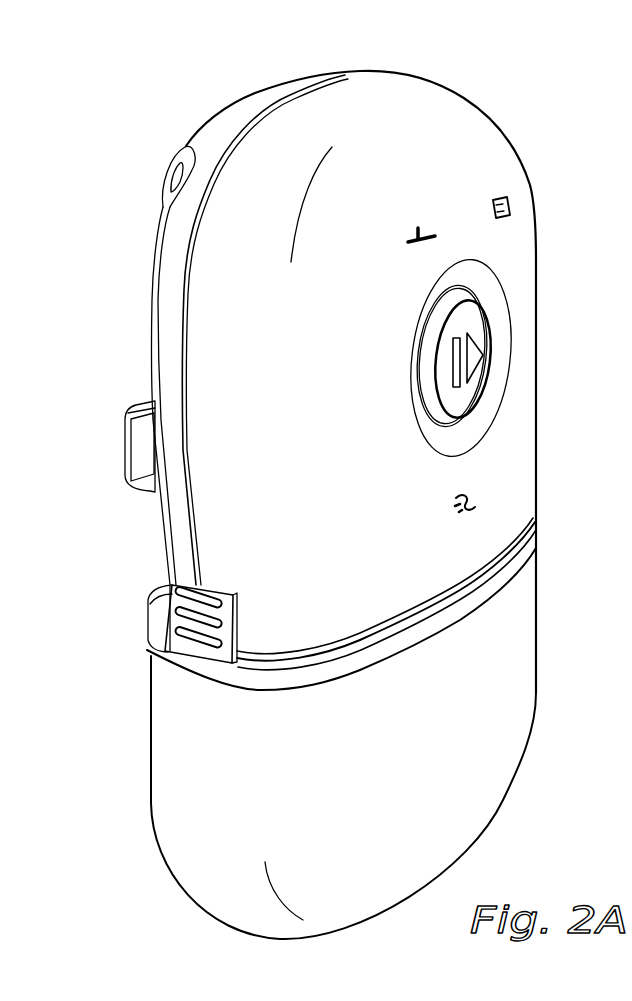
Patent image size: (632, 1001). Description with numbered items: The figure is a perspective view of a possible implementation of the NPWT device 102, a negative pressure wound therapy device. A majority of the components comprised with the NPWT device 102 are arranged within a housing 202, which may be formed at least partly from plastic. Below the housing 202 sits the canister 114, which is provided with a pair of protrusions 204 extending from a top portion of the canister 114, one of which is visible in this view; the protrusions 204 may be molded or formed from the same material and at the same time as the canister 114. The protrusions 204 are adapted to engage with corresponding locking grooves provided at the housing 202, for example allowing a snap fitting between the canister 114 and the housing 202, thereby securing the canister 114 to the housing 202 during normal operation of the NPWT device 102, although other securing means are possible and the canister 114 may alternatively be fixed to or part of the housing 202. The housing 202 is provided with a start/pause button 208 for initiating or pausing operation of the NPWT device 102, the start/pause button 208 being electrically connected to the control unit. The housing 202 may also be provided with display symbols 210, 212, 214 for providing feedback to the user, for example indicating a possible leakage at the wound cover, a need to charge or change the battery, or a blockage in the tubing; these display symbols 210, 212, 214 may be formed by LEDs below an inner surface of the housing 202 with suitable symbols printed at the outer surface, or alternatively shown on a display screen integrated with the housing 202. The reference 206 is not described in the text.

The NPWT device 102 is at (146, 132).
The canister 114 is at (215, 895).
The housing 202 is at (245, 340).
The protrusions 204 is at (195, 618).
The seam / band 206 is at (389, 604).
The start/pause button 208 is at (480, 330).
The display symbol 210 is at (420, 232).
The display symbol 212 is at (510, 204).
The display symbol 214 is at (477, 502).